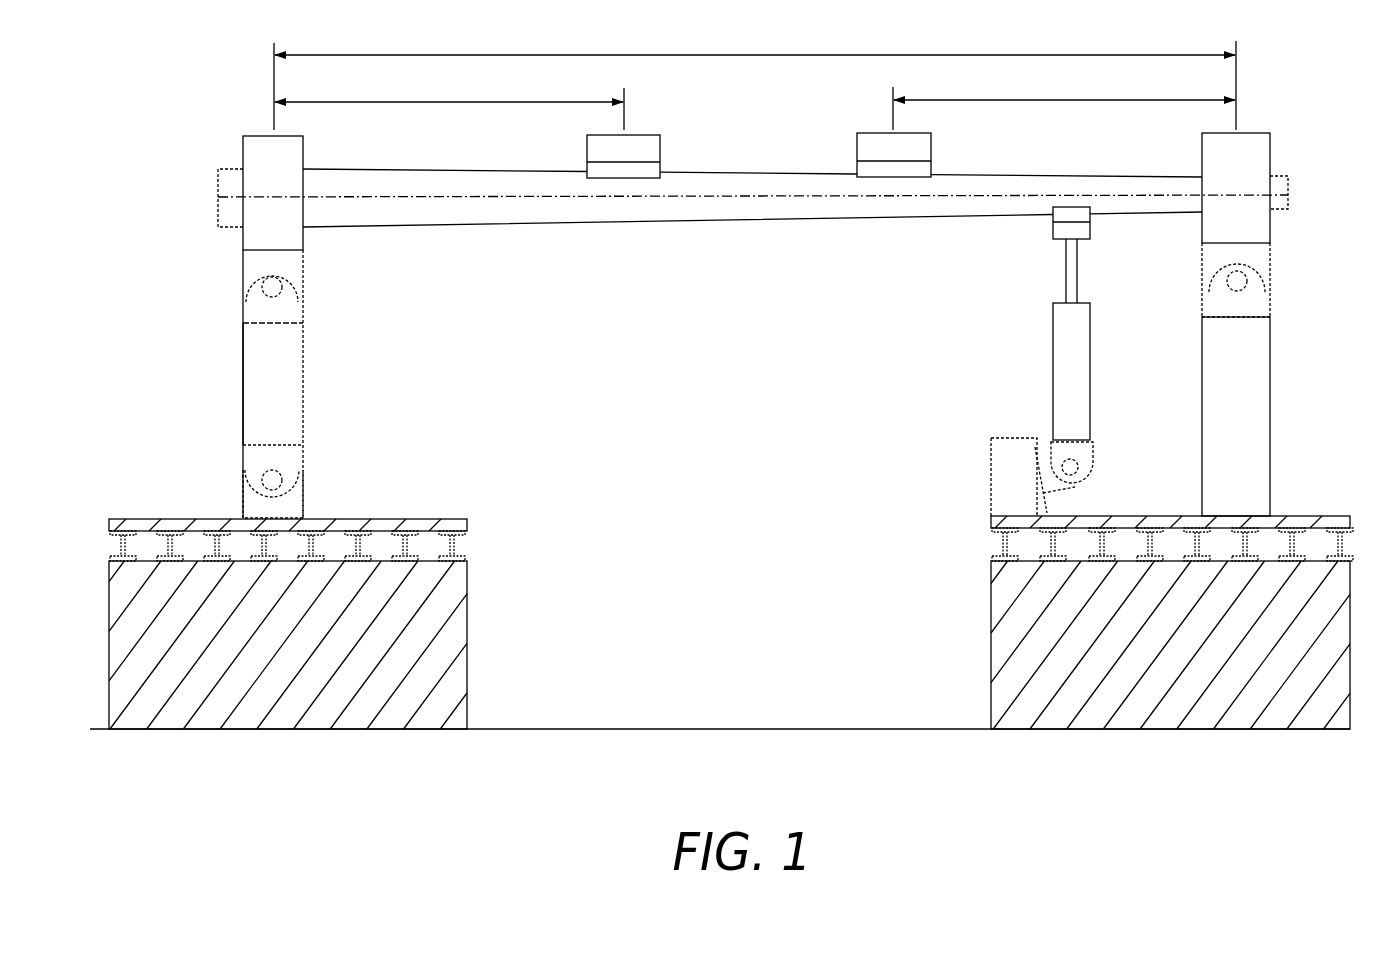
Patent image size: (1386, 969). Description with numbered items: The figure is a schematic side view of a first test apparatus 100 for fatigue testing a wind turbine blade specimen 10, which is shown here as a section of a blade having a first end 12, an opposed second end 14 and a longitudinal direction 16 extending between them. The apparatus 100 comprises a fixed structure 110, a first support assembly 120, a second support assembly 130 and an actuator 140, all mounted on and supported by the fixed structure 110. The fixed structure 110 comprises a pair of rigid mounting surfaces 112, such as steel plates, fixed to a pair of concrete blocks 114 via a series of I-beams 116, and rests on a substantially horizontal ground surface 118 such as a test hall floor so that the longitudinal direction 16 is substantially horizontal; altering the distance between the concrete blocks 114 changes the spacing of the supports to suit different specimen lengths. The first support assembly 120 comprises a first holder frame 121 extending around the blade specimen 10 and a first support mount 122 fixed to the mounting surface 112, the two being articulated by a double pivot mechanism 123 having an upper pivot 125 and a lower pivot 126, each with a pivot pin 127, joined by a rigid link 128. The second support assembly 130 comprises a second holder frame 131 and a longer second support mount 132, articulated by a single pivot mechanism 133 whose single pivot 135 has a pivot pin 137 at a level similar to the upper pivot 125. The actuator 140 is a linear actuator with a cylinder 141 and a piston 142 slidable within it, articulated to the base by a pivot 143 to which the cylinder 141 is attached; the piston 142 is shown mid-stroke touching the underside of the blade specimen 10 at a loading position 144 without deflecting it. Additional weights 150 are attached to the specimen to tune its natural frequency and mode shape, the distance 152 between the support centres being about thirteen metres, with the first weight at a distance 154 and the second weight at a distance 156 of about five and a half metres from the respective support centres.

The test apparatus 100 is at (1313, 79).
The wind turbine blade specimen 10 is at (452, 231).
The first end 12 is at (212, 214).
The second end 14 is at (1292, 198).
The longitudinal direction 16 is at (447, 194).
The fixed structure 110 is at (731, 611).
The mounting surfaces 112 is at (467, 521).
The concrete blocks 114 is at (467, 600).
The I-beams 116 is at (467, 545).
The ground surface 118 is at (708, 728).
The first support assembly 120 is at (262, 327).
The first holder frame 121 is at (243, 148).
The first support mount 122 is at (243, 490).
The double pivot mechanism 123 is at (233, 381).
The upper pivot 125 is at (303, 262).
The lower pivot 126 is at (303, 470).
The pivot pin 127 is at (283, 292).
The rigid link 128 is at (303, 380).
The second support assembly 130 is at (1253, 324).
The second holder frame 131 is at (1270, 147).
The second support mount 132 is at (1270, 418).
The single pivot mechanism 133 is at (1285, 266).
The single pivot 135 is at (1207, 268).
The pivot pin 137 is at (1229, 281).
The actuator 140 is at (1066, 324).
The cylinder 141 is at (1090, 366).
The piston 142 is at (1053, 228).
The pivot 143 is at (1093, 461).
The loading position 144 is at (1067, 206).
The additional weights 150 is at (857, 148).
The distance between the centre of the first and second supports 152 is at (755, 77).
The distance 154 is at (449, 101).
The distance 156 is at (1064, 100).